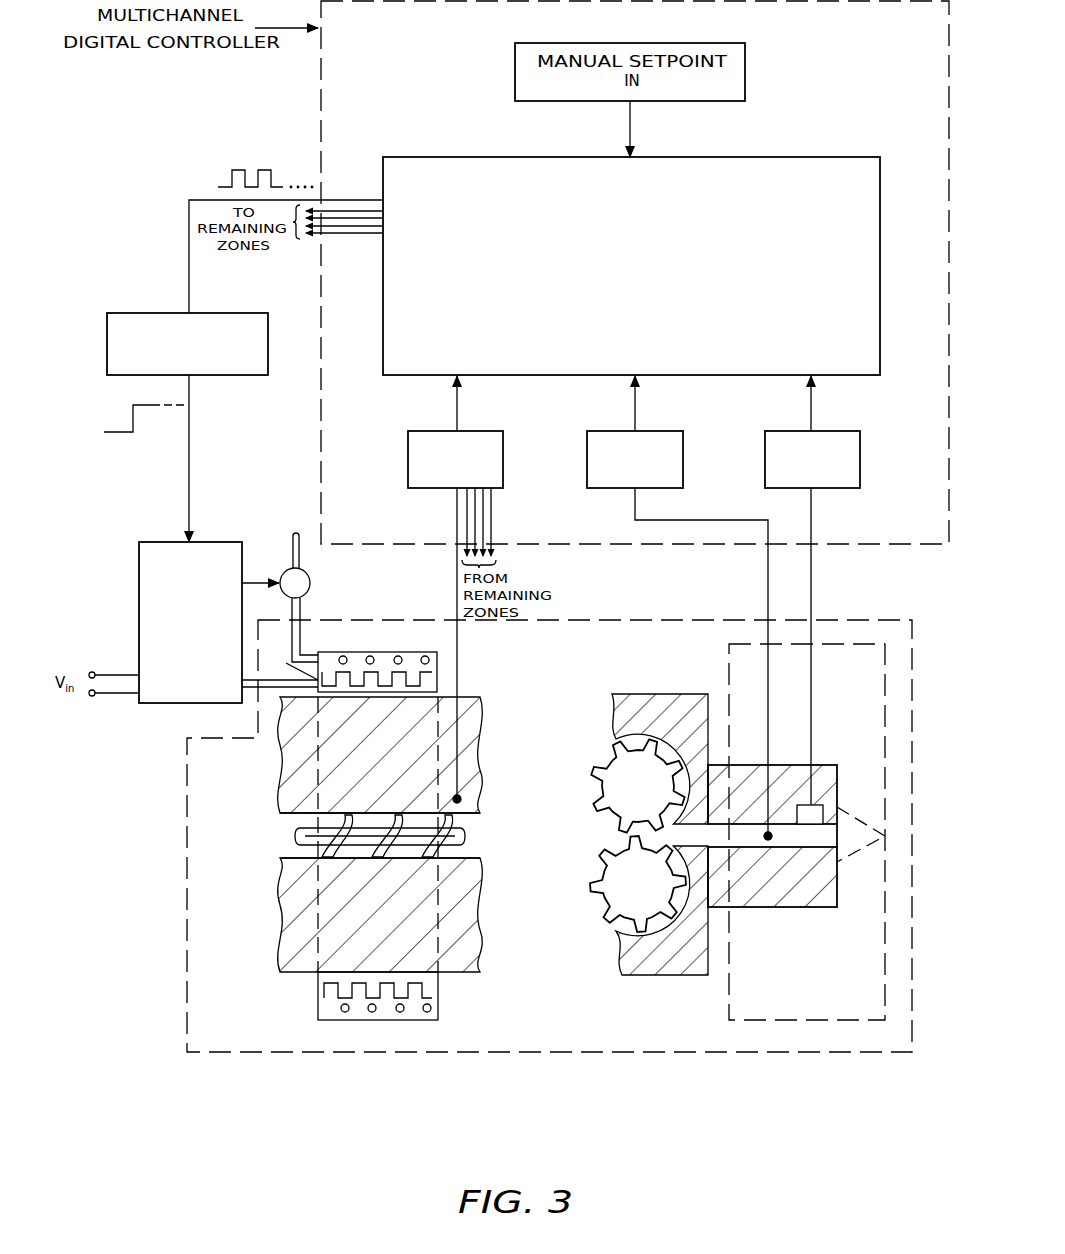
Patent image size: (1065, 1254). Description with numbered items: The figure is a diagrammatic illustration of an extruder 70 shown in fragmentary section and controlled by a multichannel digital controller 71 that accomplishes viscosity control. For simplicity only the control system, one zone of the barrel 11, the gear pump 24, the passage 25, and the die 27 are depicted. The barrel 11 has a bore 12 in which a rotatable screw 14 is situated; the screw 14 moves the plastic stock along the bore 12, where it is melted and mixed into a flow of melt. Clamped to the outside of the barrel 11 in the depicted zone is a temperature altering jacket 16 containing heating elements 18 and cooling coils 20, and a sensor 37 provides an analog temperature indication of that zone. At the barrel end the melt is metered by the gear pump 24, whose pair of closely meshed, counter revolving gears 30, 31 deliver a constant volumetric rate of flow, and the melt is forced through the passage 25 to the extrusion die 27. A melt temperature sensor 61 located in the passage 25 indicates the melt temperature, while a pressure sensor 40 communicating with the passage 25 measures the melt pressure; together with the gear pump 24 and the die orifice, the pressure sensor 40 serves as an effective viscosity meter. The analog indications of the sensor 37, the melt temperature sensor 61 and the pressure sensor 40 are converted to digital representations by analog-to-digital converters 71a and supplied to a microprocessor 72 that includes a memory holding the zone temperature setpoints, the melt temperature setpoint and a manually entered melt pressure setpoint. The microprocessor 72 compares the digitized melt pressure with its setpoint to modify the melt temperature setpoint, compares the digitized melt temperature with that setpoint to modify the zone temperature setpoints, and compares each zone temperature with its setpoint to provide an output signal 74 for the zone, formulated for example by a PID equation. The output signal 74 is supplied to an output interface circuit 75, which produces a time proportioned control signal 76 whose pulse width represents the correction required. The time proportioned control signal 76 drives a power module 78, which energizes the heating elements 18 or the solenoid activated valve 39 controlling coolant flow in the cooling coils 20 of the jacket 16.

The multichannel digital controller 71 is at (336, 107).
The microprocessor 72 is at (790, 163).
The analog-to-digital converter 71a is at (493, 431).
The output signal 74 is at (238, 165).
The output interface circuit 75 is at (142, 304).
The time proportioned control signal 76 is at (137, 437).
The power module 78 is at (139, 578).
The solenoid valve 39 is at (284, 571).
The extruder 70 is at (185, 995).
The extrusion die 27 is at (851, 656).
The temperature altering jacket 16 is at (412, 652).
The cooling coils 20 is at (397, 656).
The heating elements 18 is at (318, 680).
The barrel 11 is at (290, 915).
The bore 12 is at (292, 850).
The screw 14 is at (302, 836).
The temperature sensor 37 is at (460, 799).
The gear pump 24 is at (680, 712).
The gear 30 is at (624, 775).
The gear 31 is at (625, 891).
The passage 25 is at (805, 840).
The pressure sensor 40 is at (822, 806).
The melt temperature sensor 61 is at (768, 838).